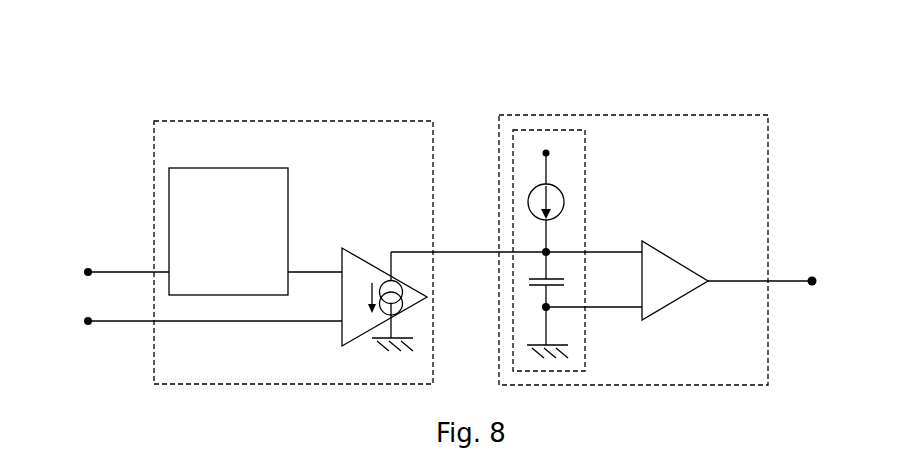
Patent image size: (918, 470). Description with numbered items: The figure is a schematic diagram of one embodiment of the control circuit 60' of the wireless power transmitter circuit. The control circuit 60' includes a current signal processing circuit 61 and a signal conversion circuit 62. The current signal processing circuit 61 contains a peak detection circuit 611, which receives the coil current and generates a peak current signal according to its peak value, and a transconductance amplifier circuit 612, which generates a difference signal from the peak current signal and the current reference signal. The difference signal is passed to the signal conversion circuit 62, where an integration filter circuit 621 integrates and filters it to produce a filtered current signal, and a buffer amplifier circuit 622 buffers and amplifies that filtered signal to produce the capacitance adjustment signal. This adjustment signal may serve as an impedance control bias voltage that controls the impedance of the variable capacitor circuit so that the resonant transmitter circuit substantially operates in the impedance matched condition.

The control circuit 60' is at (427, 202).
The current signal processing circuit 61 is at (369, 118).
The peak detection circuit 611 is at (243, 287).
The transconductance amplifier circuit 612 is at (349, 253).
The signal conversion circuit 62 is at (728, 113).
The integration filter circuit 621 is at (541, 130).
The buffer amplifier circuit 622 is at (700, 272).